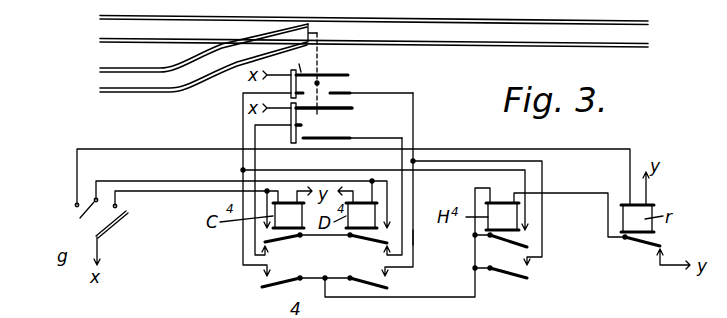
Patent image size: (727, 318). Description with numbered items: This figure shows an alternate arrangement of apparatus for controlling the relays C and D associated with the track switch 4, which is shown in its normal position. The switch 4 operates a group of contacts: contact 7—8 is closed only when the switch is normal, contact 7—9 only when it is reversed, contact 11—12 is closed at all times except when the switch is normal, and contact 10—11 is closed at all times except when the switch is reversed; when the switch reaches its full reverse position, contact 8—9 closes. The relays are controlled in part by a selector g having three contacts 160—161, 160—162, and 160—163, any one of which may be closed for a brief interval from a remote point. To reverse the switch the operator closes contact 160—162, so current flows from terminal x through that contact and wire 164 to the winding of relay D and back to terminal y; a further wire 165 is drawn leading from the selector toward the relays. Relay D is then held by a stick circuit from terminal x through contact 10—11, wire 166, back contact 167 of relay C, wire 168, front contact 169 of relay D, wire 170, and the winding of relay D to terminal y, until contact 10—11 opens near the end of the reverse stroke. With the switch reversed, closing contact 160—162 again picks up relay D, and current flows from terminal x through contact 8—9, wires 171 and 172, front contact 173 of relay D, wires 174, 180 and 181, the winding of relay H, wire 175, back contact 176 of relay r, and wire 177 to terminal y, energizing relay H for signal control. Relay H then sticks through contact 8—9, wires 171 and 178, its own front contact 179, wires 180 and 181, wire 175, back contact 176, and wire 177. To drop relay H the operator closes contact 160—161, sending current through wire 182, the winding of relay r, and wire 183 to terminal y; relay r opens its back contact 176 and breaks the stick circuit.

The switch 4 is at (308, 22).
The switch contact 8 is at (297, 59).
The switch contact 7 is at (328, 105).
The switch contact 9 is at (349, 92).
The switch contact 10 is at (306, 127).
The switch contact 11 is at (355, 110).
The switch contact 12 is at (355, 136).
The selector contact 160 is at (110, 232).
The selector contact 161 is at (74, 205).
The selector contact 162 is at (68, 216).
The selector contact 163 is at (118, 206).
The wire 164 is at (282, 180).
The wire 165 is at (353, 186).
The wire 166 is at (243, 137).
The back contact of relay C 167 is at (290, 240).
The wire 168 is at (325, 249).
The front contact of relay D 169 is at (372, 247).
The wire 170 is at (402, 193).
The wire 171 is at (413, 128).
The wire 172 is at (413, 237).
The front contact of relay D 173 is at (389, 287).
The wire 174 is at (455, 297).
The wire 175 is at (591, 194).
The back contact of relay r 176 is at (660, 243).
The wire 177 is at (661, 268).
The wire 178 is at (543, 176).
The front contact of relay H 179 is at (503, 274).
The wire 180 is at (475, 259).
The wire 181 is at (475, 188).
The wire 182 is at (100, 149).
The wire 183 is at (650, 190).